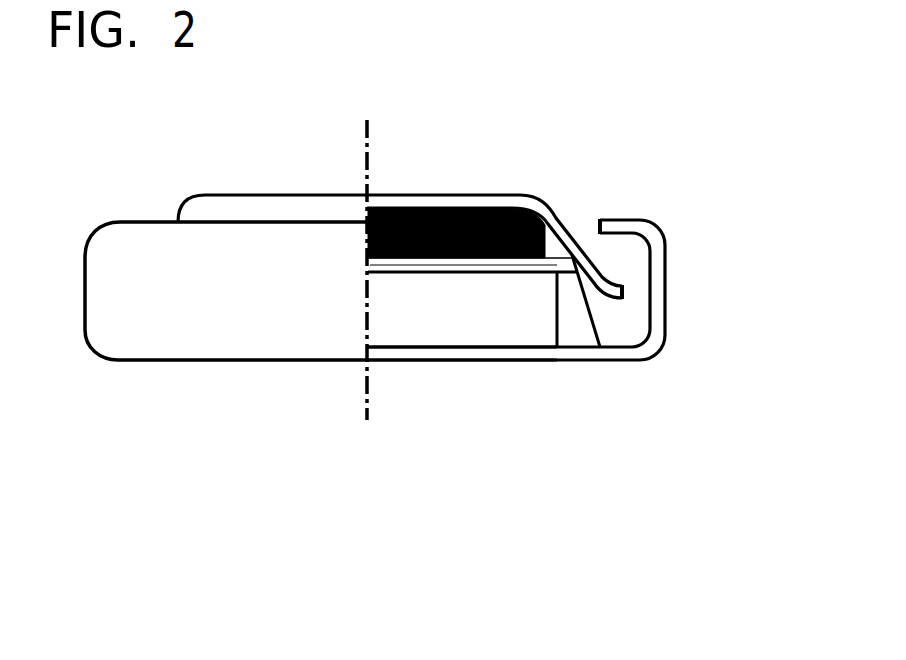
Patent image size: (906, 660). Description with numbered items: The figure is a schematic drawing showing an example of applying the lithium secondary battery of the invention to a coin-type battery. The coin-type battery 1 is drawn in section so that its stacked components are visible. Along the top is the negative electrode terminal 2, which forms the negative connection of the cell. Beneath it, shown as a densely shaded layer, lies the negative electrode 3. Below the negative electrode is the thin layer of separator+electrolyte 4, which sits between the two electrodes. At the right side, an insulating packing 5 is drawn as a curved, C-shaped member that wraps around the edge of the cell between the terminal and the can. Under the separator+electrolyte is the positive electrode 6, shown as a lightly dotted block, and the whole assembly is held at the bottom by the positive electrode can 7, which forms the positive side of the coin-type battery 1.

The coin-type lithium secondary battery 1 is at (226, 291).
The negative electrode terminal 2 is at (385, 203).
The negative electrode 3 is at (469, 228).
The separator+electrolyte 4 is at (558, 266).
The insulating packing 5 is at (612, 323).
The positive electrode 6 is at (478, 310).
The positive electrode can 7 is at (408, 352).